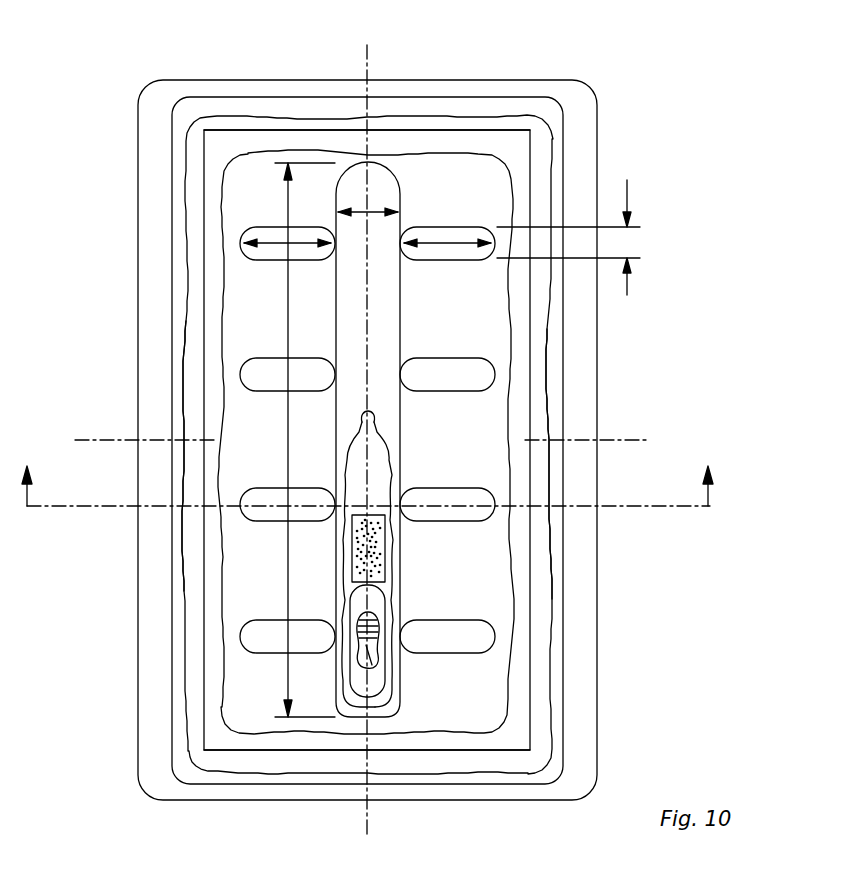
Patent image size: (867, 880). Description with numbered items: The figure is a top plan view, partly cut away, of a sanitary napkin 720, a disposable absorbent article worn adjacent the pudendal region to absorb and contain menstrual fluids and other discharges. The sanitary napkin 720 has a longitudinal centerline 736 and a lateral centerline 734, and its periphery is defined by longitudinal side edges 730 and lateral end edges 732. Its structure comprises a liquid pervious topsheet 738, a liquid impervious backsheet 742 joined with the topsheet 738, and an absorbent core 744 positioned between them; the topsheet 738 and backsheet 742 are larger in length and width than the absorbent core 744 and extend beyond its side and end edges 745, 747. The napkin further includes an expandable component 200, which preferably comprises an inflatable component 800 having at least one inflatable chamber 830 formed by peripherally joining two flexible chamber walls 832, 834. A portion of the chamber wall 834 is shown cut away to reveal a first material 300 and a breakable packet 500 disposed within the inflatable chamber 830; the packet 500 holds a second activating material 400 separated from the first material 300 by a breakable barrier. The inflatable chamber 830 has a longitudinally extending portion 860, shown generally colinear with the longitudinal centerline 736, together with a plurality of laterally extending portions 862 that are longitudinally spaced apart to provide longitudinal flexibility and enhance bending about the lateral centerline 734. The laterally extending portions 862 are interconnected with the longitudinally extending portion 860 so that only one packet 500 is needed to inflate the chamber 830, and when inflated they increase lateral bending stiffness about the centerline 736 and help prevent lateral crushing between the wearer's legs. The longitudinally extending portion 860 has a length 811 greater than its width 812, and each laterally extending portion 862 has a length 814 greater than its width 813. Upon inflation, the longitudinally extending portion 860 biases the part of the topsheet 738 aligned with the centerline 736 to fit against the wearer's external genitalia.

The sanitary napkin 720 is at (613, 77).
The longitudinal side edges 730 is at (598, 155).
The lateral end edges 732 is at (481, 80).
The topsheet 738 is at (557, 283).
The backsheet 742 is at (545, 325).
The absorbent core 744 is at (213, 142).
The side edges of absorbent core 745 is at (531, 152).
The end edges of absorbent core 747 is at (304, 130).
The longitudinal centerline 736 is at (368, 56).
The lateral centerline 734 is at (88, 440).
The inflatable component 800 is at (386, 165).
The length of longitudinally extending portion 811 is at (288, 432).
The width of longitudinally extending portion 812 is at (368, 210).
The width of laterally extending portion 813 is at (629, 200).
The length of laterally extending portion 814 is at (290, 242).
The expandable component 200 is at (421, 196).
The longitudinally extending portion 860 is at (385, 312).
The laterally extending portions 862 is at (265, 375).
The chamber wall 834 is at (389, 412).
The inflatable chamber 830 is at (374, 452).
The chamber wall 832 is at (381, 476).
The first material 300 is at (370, 550).
The breakable packet 500 is at (371, 602).
The second activating material 400 is at (371, 658).